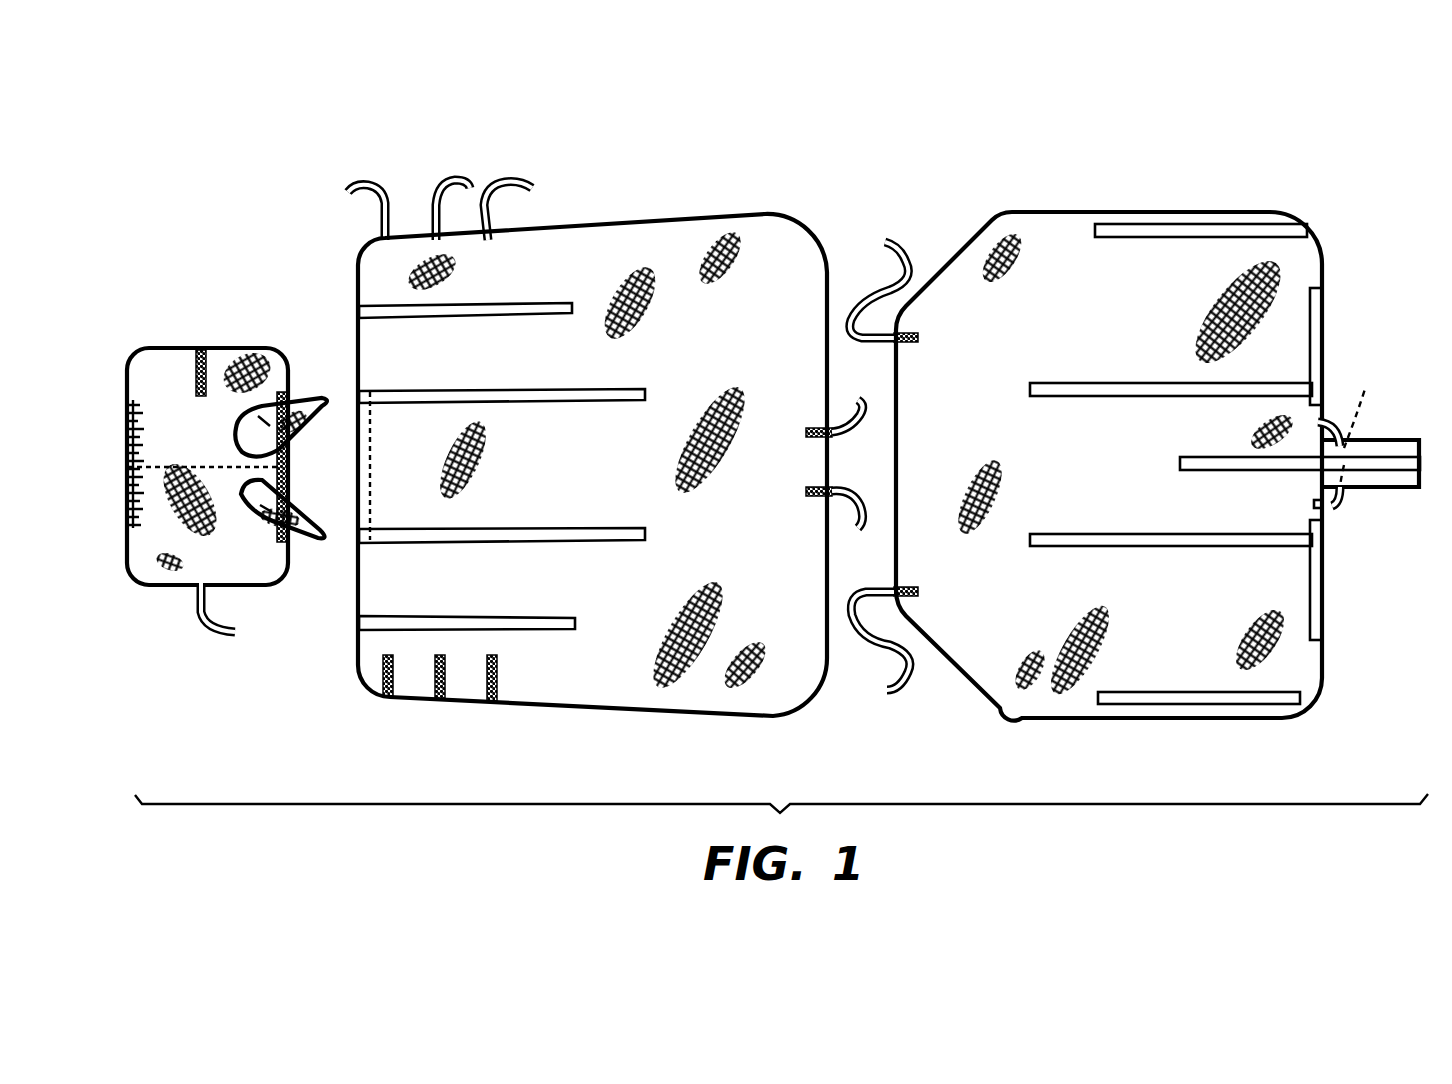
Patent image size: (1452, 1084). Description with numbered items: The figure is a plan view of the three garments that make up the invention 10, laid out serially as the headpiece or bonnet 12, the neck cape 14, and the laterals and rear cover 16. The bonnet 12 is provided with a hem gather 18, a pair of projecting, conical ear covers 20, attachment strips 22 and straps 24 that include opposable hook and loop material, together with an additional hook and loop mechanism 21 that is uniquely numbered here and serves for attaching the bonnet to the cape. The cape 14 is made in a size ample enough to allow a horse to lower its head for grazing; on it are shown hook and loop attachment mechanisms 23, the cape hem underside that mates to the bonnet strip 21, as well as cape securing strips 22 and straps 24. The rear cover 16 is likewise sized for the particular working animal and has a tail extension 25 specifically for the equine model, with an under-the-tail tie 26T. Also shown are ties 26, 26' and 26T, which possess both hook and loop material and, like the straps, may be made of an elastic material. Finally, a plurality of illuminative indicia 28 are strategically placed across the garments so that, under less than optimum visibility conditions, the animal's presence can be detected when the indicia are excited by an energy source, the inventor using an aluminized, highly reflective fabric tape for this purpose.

The invention 10 is at (848, 132).
The bonnet 12 is at (168, 366).
The neck cape 14 is at (656, 235).
The rear cover 16 is at (1063, 232).
The hem gather 18 is at (138, 470).
The ear covers 20 is at (306, 398).
The Velcro mechanism 21 is at (288, 478).
The attachment strips 22 is at (201, 366).
The Velcro attachment mechanism 23 is at (372, 478).
The straps 24 is at (222, 640).
The tail extension 25 is at (1397, 487).
The ties 26 is at (851, 464).
The ties 26' is at (890, 457).
The under-the-tail tie 26T is at (1336, 424).
The illuminative indicia 28 is at (528, 338).